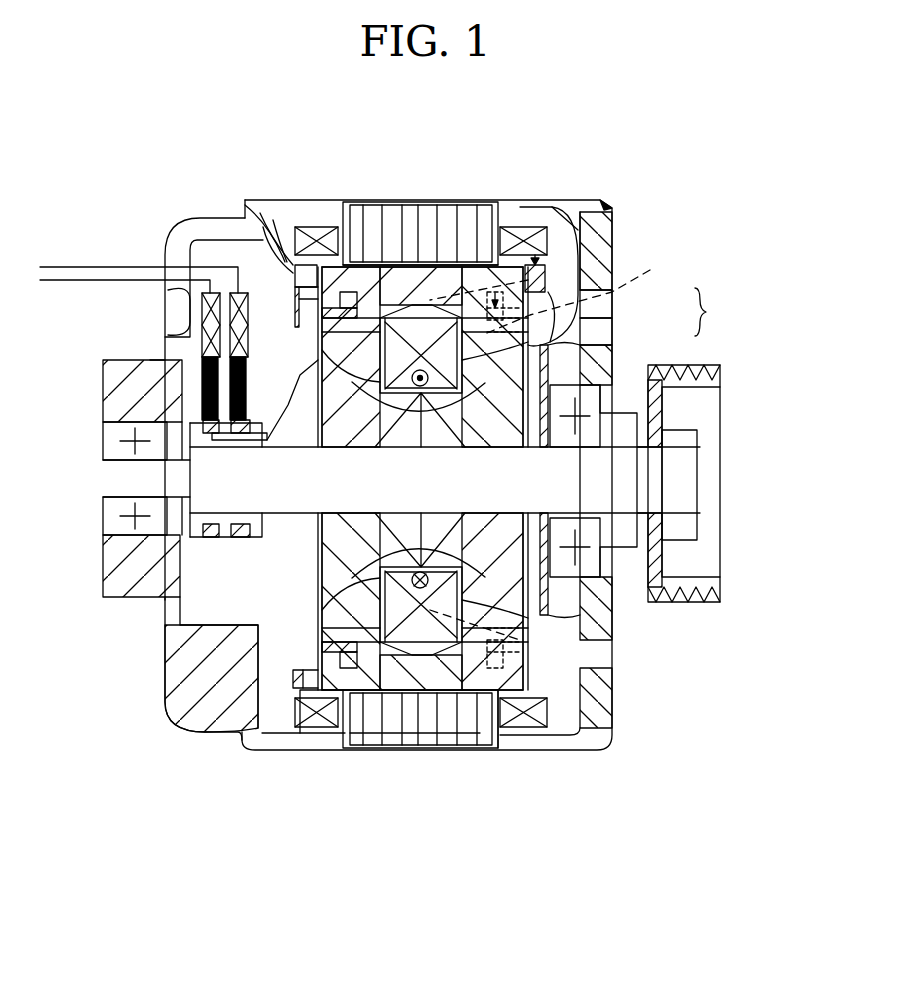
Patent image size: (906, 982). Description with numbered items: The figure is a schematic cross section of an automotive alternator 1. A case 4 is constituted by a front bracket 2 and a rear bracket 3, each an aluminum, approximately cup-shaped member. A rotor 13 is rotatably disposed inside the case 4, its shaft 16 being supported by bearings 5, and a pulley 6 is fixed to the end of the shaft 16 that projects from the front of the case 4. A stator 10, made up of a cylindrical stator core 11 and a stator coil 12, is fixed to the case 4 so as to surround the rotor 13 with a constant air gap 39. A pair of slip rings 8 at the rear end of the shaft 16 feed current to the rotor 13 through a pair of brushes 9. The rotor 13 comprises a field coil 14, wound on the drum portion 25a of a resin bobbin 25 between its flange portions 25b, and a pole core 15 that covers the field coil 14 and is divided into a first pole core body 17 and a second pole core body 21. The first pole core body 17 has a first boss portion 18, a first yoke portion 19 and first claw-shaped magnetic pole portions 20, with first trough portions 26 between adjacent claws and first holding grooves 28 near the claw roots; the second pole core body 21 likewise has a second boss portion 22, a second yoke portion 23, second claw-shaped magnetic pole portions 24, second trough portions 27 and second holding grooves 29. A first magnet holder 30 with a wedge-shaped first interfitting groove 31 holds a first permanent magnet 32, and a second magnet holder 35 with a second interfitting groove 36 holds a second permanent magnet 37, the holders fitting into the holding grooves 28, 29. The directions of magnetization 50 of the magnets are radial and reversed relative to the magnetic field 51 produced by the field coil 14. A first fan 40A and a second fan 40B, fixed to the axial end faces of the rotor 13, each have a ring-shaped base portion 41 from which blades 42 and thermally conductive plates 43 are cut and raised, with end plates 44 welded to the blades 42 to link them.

The automotive alternator 1 is at (122, 108).
The front bracket 2 is at (614, 226).
The rear bracket 3 is at (178, 225).
The case 4 is at (616, 206).
The bearings 5 is at (118, 440).
The pulley 6 is at (700, 365).
The slip rings 8 is at (245, 440).
The brushes 9 is at (212, 385).
The stator 10 is at (527, 800).
The stator core 11 is at (478, 738).
The stator coil 12 is at (508, 738).
The rotor 13 is at (530, 255).
The field coil 14 is at (413, 735).
The pole core 15 is at (452, 148).
The shaft 16 is at (650, 487).
The first pole core body 17 is at (440, 262).
The first boss portion 18 is at (540, 570).
The first yoke portion 19 is at (540, 600).
The first claw-shaped magnetic pole portions 20 is at (455, 733).
The second pole core body 21 is at (390, 262).
The second boss portion 22 is at (322, 535).
The second yoke portion 23 is at (325, 585).
The second claw-shaped magnetic pole portions 24 is at (385, 730).
The bobbin 25 is at (714, 312).
The drum portion 25a is at (612, 348).
The flange portions 25b is at (612, 322).
The first trough portions 26 is at (523, 637).
The second trough portions 27 is at (325, 630).
The first holding grooves 28 is at (550, 752).
The second holding grooves 29 is at (330, 654).
The first magnet holder 30 is at (553, 293).
The first interfitting groove 31 is at (528, 656).
The first permanent magnet 32 is at (490, 290).
The second magnet holder 35 is at (260, 685).
The second interfitting groove 36 is at (297, 690).
The second permanent magnet 37 is at (342, 292).
The air gap 39 is at (345, 670).
The first fan 40A is at (558, 215).
The second fan 40B is at (300, 263).
The base portion 41 is at (313, 327).
The blades 42 is at (305, 292).
The thermally conductive plates 43 is at (262, 735).
The end plates 44 is at (262, 206).
The directions of magnetization 50 is at (333, 306).
The magnetic field 51 is at (305, 372).